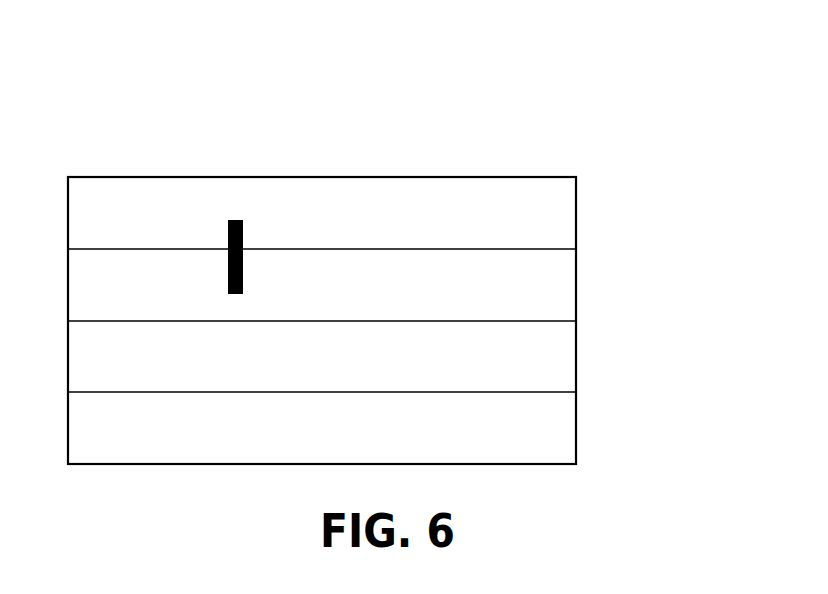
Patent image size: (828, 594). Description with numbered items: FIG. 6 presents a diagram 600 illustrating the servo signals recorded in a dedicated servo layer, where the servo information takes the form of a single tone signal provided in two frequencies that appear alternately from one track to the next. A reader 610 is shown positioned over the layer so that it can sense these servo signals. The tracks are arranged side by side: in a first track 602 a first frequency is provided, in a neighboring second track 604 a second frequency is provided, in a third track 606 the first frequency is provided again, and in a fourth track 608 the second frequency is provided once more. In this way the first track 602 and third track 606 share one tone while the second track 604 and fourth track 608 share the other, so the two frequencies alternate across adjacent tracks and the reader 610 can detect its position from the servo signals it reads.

The diagram 600 is at (608, 102).
The first track 602 is at (558, 223).
The second track 604 is at (558, 305).
The third track 606 is at (558, 379).
The fourth track 608 is at (558, 452).
The reader 610 is at (237, 218).